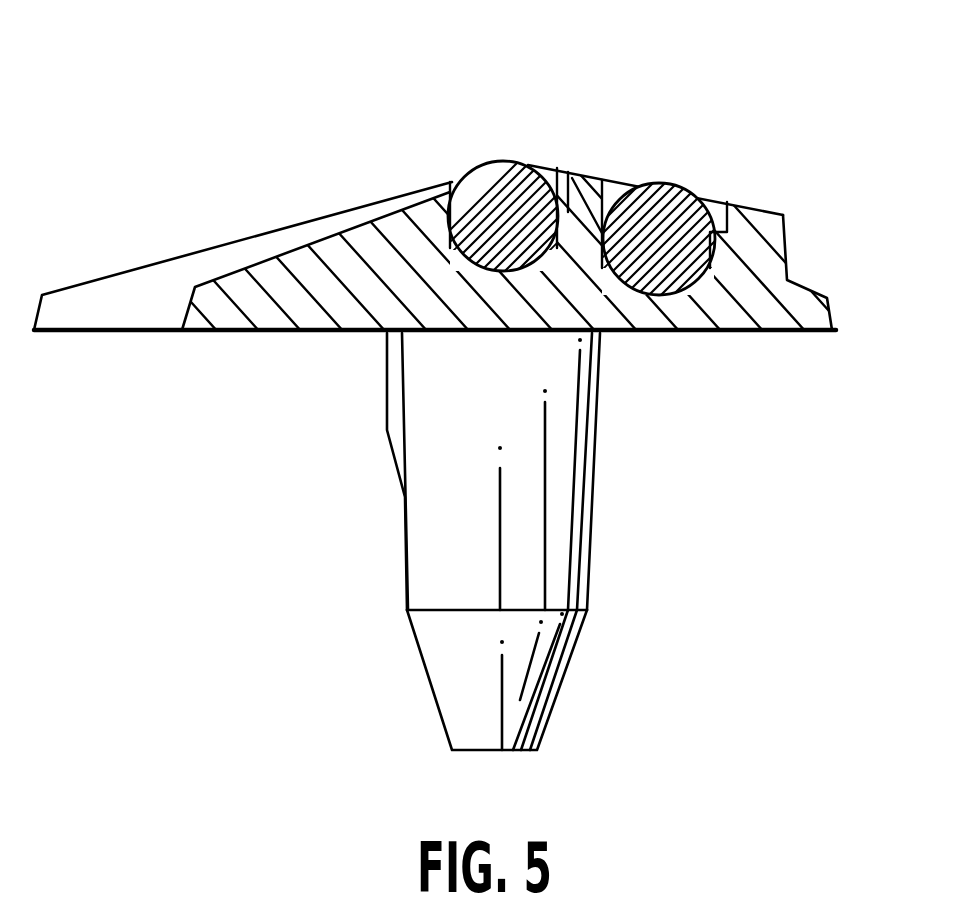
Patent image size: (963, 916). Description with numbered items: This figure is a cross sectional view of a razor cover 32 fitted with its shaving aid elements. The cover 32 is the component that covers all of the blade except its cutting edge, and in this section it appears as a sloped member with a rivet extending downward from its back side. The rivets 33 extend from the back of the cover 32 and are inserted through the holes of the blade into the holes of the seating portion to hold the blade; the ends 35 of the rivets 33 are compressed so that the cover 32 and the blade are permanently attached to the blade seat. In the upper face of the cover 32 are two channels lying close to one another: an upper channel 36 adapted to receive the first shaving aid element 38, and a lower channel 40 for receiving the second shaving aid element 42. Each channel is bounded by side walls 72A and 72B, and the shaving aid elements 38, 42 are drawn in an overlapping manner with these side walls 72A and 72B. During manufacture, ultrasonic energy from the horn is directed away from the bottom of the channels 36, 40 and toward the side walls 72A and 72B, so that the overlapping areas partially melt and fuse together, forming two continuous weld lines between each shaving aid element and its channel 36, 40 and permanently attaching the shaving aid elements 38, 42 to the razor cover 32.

The cover 32 is at (240, 252).
The rivets 33 is at (577, 457).
The ends 35 is at (520, 680).
The upper channel 36 is at (618, 190).
The first shaving aid element 38 is at (665, 235).
The lower channel 40 is at (450, 178).
The second shaving aid element 42 is at (529, 168).
The side wall 72A is at (642, 188).
The side wall 72B is at (717, 252).